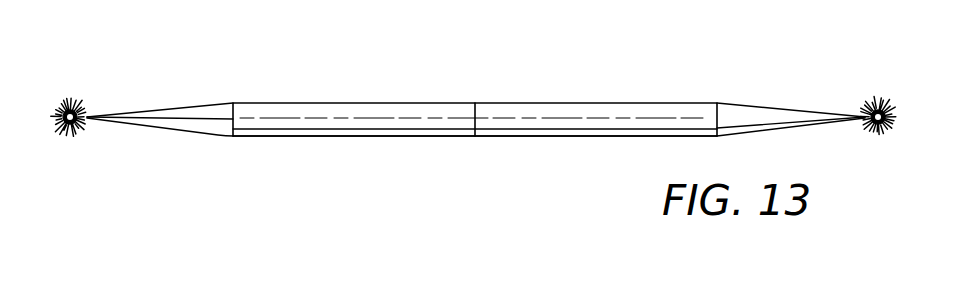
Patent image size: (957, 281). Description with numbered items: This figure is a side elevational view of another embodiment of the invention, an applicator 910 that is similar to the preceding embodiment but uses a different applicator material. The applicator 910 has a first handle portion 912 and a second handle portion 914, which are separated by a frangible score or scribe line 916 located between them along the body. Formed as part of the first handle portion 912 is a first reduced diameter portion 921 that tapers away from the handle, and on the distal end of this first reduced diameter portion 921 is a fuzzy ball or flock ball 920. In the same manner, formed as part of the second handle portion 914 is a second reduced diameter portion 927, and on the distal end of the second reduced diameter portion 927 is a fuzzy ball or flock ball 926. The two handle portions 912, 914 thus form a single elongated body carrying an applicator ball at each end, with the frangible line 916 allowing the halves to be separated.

The applicator 910 is at (473, 115).
The first handle portion 912 is at (330, 103).
The second handle portion 914 is at (596, 136).
The frangible score or scribe line 916 is at (475, 113).
The fuzzy ball or flock ball 920 is at (80, 98).
The first reduced diameter portion 921 is at (193, 110).
The fuzzy ball or flock ball 926 is at (885, 97).
The second reduced diameter portion 927 is at (768, 108).